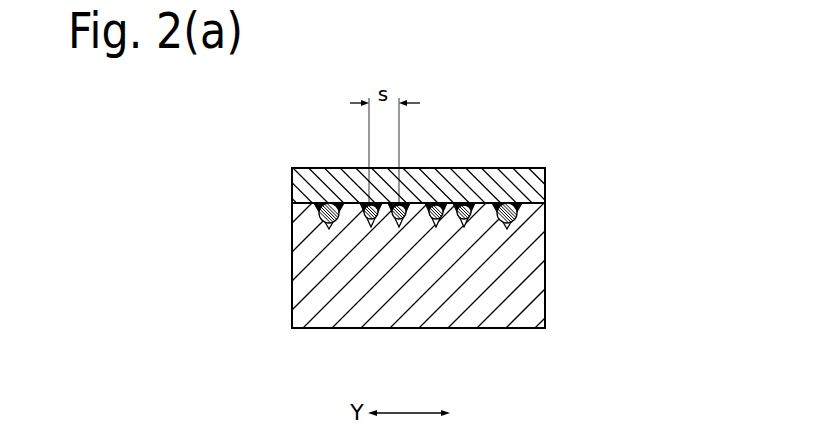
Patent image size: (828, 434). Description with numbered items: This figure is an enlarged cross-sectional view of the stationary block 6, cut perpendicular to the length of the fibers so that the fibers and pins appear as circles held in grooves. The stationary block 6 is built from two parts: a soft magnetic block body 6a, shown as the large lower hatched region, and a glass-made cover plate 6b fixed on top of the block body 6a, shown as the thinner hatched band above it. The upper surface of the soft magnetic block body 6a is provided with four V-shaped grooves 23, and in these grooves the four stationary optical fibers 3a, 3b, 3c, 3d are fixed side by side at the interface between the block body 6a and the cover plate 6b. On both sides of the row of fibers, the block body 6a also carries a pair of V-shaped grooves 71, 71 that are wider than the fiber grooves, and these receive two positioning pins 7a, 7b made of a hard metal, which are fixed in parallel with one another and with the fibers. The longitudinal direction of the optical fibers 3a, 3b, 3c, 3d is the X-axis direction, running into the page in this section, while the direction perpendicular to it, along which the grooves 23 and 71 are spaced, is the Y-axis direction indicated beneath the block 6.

The stationary block 6 is at (548, 158).
The soft magnetic block body 6a is at (538, 283).
The glass-made cover plate 6b is at (538, 180).
The stationary optical fiber 3a is at (361, 205).
The stationary optical fiber 3b is at (406, 205).
The stationary optical fiber 3c is at (438, 205).
The stationary optical fiber 3d is at (466, 205).
The positioning pin 7a is at (320, 205).
The positioning pin 7b is at (506, 205).
The V-shaped groove 71 is at (328, 228).
The V-shaped groove 23 is at (363, 228).